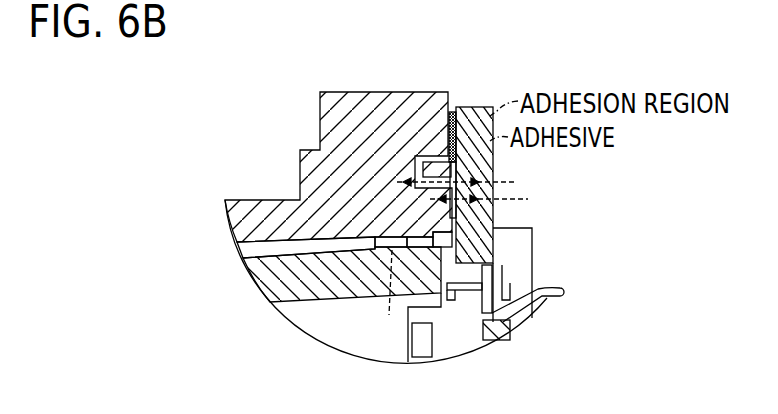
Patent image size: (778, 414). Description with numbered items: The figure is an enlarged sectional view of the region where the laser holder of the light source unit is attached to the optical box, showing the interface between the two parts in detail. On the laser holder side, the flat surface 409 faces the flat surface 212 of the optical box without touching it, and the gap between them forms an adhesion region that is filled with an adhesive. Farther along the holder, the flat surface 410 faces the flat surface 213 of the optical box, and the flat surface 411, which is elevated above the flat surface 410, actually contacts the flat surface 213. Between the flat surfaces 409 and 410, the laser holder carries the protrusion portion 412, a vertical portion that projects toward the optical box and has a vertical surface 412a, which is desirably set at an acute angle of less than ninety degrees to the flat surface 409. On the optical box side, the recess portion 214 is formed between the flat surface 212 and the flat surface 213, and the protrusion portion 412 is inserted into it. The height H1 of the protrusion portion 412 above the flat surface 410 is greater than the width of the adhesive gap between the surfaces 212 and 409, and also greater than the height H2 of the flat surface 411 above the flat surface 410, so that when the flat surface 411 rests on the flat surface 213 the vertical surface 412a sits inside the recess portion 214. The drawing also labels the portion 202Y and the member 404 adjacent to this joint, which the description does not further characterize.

The recess portion 214 is at (413, 167).
The protrusion portion 412 is at (405, 158).
The vertical surface 412a is at (446, 163).
The flat surface 212 is at (451, 111).
The flat surface 409 is at (462, 106).
The height H1 is at (472, 171).
The flat surface 410 is at (501, 197).
The side wall 202Y is at (500, 208).
The flat surface 411 is at (480, 222).
The base member 404 is at (300, 283).
The height H2 is at (383, 297).
The flat surface 213 is at (438, 265).